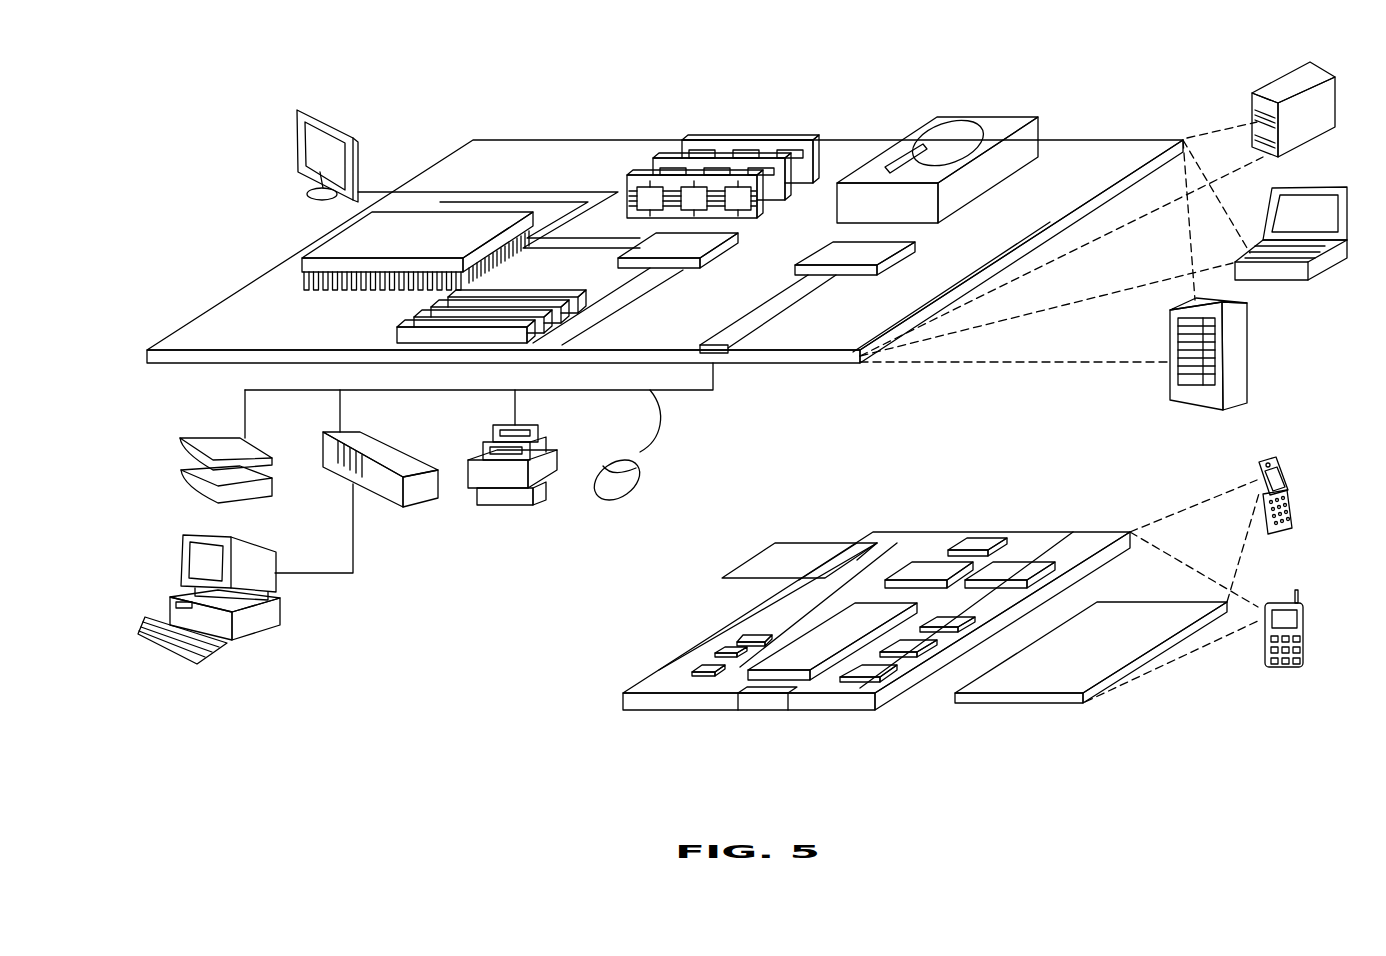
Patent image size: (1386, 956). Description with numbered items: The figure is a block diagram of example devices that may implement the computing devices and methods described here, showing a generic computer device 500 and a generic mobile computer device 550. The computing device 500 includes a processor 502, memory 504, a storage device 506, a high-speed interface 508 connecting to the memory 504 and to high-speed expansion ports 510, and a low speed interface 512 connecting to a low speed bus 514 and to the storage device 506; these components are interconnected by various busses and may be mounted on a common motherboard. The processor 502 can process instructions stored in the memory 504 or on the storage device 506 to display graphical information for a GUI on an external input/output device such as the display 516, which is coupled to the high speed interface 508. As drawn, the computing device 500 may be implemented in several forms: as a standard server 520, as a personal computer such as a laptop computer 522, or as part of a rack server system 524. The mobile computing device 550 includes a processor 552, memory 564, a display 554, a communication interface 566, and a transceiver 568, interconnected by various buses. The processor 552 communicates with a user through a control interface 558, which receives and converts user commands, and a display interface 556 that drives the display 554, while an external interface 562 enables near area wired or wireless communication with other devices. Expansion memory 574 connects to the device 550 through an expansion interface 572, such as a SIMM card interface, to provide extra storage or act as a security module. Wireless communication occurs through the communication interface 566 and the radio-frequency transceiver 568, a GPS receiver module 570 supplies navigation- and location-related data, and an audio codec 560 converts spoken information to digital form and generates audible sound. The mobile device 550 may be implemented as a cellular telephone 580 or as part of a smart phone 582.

The computing device 500 is at (425, 86).
The processor 502 is at (324, 242).
The memory 504 is at (753, 133).
The storage device 506 is at (977, 115).
The high-speed interface 508 is at (690, 243).
The high-speed expansion ports 510 is at (418, 317).
The low speed interface 512 is at (828, 252).
The low speed bus 514 is at (718, 338).
The display 516 is at (298, 110).
The standard server 520 is at (1270, 90).
The laptop computer 522 is at (1323, 185).
The rack server system 524 is at (1248, 355).
The mobile computer device 550 is at (580, 717).
The processor 552 is at (802, 648).
The display 554 is at (1125, 616).
The display interface 556 is at (880, 670).
The control interface 558 is at (916, 645).
The audio codec 560 is at (950, 614).
The external interface 562 is at (765, 697).
The memory 564 is at (715, 652).
The communication interface 566 is at (930, 562).
The transceiver 568 is at (1020, 565).
The GPS receiver module 570 is at (980, 540).
The expansion interface 572 is at (857, 543).
The expansion memory 574 is at (776, 543).
The cellular telephone 580 is at (1268, 460).
The smart phone 582 is at (1278, 603).